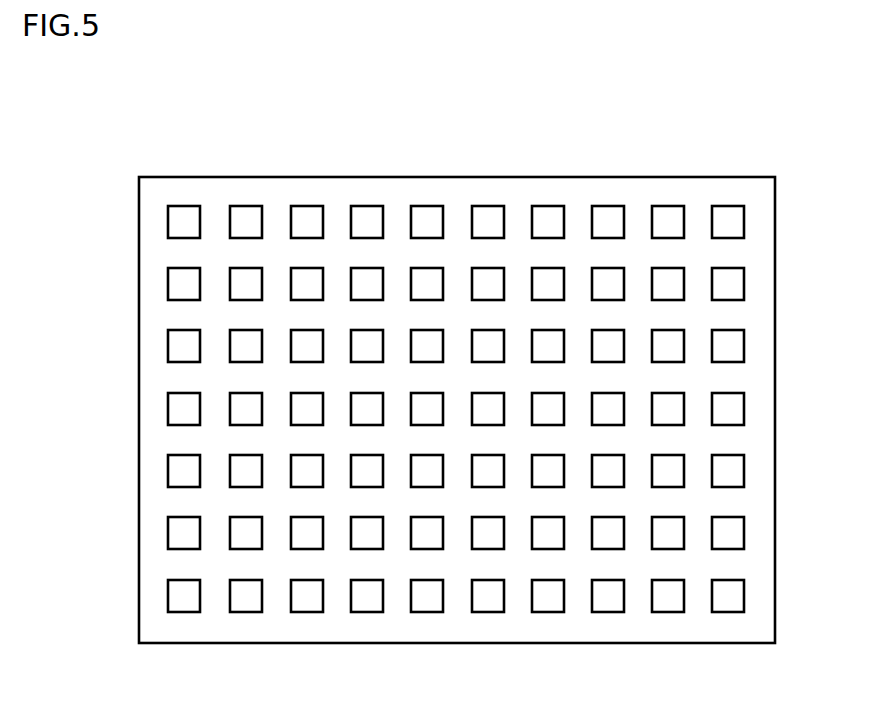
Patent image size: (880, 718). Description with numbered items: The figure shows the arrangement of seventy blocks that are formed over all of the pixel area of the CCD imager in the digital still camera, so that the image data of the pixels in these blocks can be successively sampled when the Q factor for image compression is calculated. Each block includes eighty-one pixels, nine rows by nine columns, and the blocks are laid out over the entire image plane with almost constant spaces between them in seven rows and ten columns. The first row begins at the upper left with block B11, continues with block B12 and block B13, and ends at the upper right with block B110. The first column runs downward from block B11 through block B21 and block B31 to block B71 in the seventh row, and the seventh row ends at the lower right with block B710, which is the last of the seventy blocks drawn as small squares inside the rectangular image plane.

The block B11 is at (170, 217).
The block B12 is at (243, 205).
The block B13 is at (313, 205).
The block B110 is at (732, 207).
The block B21 is at (168, 281).
The block B31 is at (168, 343).
The block B71 is at (168, 597).
The block B710 is at (728, 614).